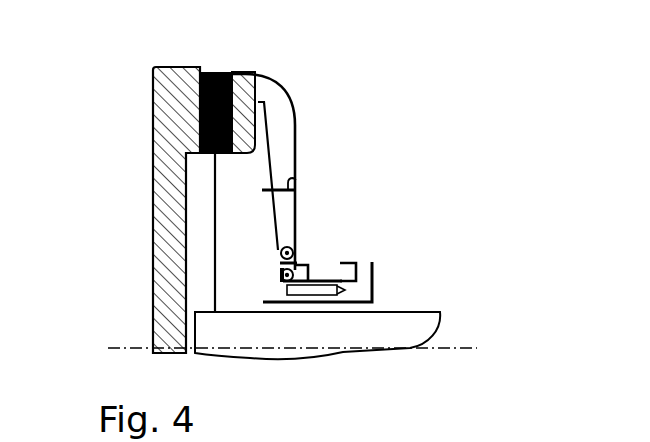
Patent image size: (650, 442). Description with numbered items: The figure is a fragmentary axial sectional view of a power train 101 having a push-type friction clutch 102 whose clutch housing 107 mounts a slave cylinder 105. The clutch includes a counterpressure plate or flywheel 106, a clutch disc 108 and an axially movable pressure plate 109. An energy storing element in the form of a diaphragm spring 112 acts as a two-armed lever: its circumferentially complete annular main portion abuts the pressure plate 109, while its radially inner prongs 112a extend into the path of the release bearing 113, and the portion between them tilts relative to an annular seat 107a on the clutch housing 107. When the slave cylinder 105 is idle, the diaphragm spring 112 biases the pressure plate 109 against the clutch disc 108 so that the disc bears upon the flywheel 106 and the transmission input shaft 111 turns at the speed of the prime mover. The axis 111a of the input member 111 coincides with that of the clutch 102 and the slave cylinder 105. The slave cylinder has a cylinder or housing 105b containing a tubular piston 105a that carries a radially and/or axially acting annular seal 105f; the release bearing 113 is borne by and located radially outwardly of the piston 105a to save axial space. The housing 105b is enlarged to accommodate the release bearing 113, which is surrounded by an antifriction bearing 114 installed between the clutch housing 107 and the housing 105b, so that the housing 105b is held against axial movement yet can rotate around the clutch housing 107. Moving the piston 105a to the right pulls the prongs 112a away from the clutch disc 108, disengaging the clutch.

The power train 101 is at (139, 109).
The friction clutch 102 is at (392, 130).
The slave cylinder 105 is at (323, 268).
The piston 105a is at (310, 292).
The cylinder or housing of the slave cylinder 105b is at (338, 278).
The annular seal 105f is at (340, 288).
The counterpressure plate (flywheel) 106 is at (153, 152).
The clutch housing 107 is at (293, 103).
The annular seat 107a is at (296, 180).
The clutch disc 108 is at (211, 72).
The pressure plate 109 is at (246, 72).
The transmission input shaft (input member) 111 is at (272, 344).
The axis 111a is at (477, 345).
The diaphragm spring 112 is at (270, 152).
The prongs 112a is at (282, 270).
The release bearing 113 is at (283, 281).
The antifriction bearing 114 is at (280, 249).